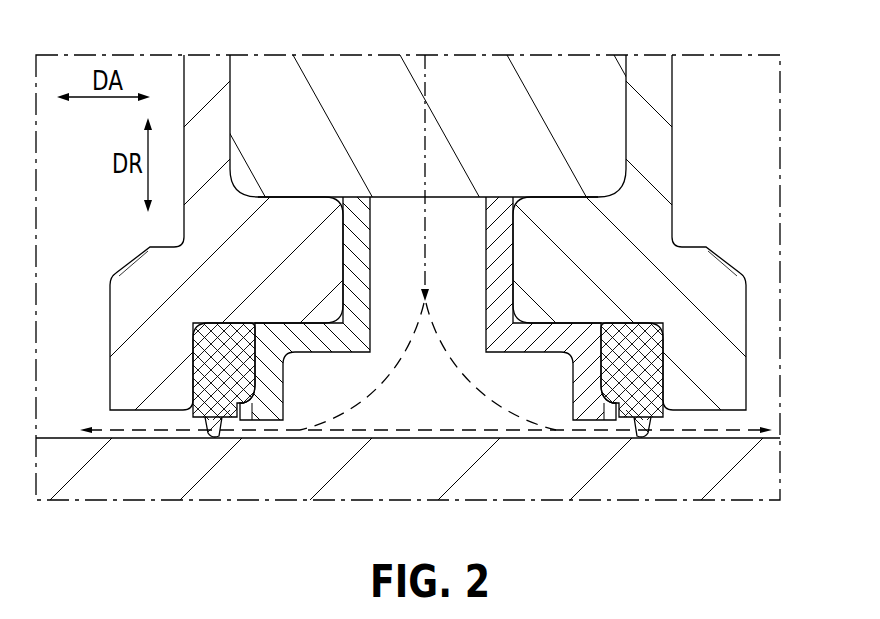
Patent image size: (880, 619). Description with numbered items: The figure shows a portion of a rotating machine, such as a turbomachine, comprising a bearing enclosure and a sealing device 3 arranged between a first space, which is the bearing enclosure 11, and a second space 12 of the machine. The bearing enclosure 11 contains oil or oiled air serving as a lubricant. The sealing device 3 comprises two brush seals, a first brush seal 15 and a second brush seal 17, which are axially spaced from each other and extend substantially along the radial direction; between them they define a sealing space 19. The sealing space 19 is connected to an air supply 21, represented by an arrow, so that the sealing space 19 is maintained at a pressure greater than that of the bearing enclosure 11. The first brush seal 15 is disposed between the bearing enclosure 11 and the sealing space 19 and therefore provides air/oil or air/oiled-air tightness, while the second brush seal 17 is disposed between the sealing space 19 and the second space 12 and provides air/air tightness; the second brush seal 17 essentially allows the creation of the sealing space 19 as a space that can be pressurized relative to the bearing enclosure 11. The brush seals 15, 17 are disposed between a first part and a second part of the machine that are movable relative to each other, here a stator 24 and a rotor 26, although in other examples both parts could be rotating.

The sealing device 3 is at (762, 333).
The bearing enclosure 11 is at (728, 423).
The second space 12 is at (88, 259).
The first brush seal 15 is at (665, 352).
The second brush seal 17 is at (193, 366).
The sealing space 19 is at (438, 396).
The air supply 21 is at (424, 88).
The stator 24 is at (690, 251).
The rotor 26 is at (553, 473).